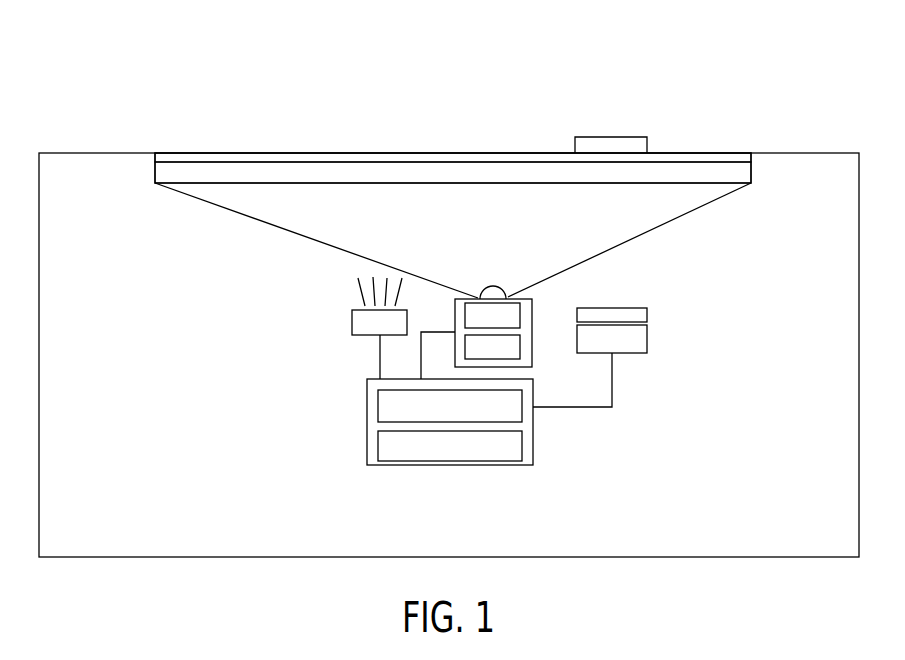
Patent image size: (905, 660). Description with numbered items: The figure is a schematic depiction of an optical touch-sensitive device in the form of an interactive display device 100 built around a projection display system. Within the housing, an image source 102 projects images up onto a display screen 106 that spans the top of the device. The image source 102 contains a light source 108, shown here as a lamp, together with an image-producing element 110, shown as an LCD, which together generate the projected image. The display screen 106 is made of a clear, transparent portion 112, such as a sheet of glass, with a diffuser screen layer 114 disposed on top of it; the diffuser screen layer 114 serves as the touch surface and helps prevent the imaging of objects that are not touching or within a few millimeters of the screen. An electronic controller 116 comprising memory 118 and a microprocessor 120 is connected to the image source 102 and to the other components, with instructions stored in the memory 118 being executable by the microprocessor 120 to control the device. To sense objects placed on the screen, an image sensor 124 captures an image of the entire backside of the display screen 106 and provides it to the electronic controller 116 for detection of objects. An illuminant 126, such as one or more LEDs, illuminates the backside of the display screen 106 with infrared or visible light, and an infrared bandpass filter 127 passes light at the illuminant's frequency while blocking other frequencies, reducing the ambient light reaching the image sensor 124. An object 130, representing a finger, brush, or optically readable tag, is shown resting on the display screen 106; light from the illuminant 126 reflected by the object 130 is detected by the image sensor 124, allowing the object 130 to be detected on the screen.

The interactive display device 100 is at (112, 94).
The image source 102 is at (510, 330).
The display screen 106 is at (453, 136).
The light source 108 is at (521, 348).
The image-producing element 110 is at (463, 316).
The clear, transparent portion 112 is at (273, 175).
The diffuser screen layer 114 is at (333, 158).
The electronic controller 116 is at (439, 420).
The memory 118 is at (378, 400).
The microprocessor 120 is at (524, 443).
The image sensor 124 is at (638, 323).
The illuminant 126 is at (352, 320).
The infrared bandpass filter 127 is at (638, 314).
The object 130 is at (584, 148).